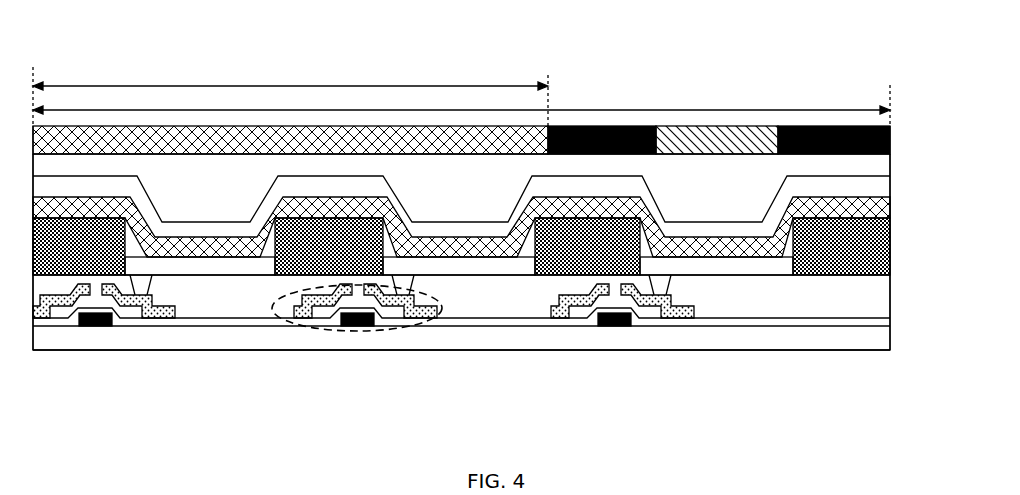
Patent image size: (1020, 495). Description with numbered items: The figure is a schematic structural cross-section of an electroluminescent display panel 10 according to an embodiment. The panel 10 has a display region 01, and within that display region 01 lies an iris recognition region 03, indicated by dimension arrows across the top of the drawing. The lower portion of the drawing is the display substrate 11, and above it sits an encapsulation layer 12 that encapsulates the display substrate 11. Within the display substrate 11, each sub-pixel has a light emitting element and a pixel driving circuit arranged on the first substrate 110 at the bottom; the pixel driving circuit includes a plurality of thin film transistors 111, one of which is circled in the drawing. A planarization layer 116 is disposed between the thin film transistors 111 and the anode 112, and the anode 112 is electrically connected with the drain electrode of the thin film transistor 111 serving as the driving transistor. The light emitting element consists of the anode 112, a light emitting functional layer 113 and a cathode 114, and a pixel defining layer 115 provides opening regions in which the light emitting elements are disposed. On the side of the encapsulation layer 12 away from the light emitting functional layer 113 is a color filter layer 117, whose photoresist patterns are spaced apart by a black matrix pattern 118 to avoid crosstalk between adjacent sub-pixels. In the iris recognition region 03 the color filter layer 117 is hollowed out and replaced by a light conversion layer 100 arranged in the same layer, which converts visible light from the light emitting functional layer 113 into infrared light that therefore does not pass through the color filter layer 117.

The display panel 10 is at (52, 46).
The display region 01 is at (461, 105).
The iris recognition region 03 is at (290, 95).
The light conversion layer 100 is at (202, 130).
The black matrix pattern 118 is at (599, 125).
The color filter layer 117 is at (708, 143).
The encapsulation layer 12 is at (855, 165).
The display substrate 11 is at (893, 176).
The first substrate 110 is at (648, 338).
The thin film transistor 111 is at (348, 332).
The anode 112 is at (452, 263).
The light emitting functional layer 113 is at (473, 250).
The cathode 114 is at (717, 227).
The pixel defining layer 115 is at (835, 276).
The planarization layer 116 is at (788, 293).